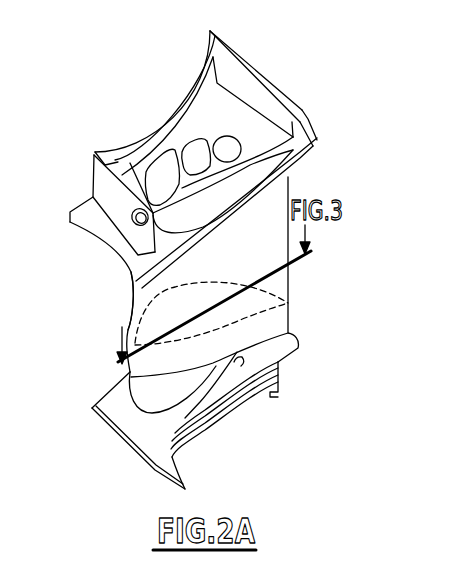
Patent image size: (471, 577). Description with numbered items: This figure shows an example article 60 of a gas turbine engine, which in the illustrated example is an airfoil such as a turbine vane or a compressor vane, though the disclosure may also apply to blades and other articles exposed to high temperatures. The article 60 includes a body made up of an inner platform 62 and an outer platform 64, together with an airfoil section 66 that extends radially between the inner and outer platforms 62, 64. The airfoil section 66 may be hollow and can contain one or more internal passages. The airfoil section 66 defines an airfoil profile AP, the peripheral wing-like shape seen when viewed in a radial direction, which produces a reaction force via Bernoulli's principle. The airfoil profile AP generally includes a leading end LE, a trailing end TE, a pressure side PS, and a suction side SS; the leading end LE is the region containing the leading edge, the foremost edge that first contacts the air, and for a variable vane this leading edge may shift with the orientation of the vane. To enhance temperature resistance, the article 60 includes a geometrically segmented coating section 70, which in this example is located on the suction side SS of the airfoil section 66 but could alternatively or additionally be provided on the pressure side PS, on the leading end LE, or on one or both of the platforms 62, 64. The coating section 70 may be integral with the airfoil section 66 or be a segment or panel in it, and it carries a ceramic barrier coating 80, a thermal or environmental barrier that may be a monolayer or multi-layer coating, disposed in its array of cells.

The article 60 is at (82, 334).
The inner platform 62 is at (132, 423).
The outer platform 64 is at (93, 227).
The airfoil section 66 is at (120, 307).
The geometrically segmented coating section 70 is at (250, 292).
The coating 80 is at (240, 370).
The suction side SS is at (182, 272).
The pressure side PS is at (202, 352).
The leading end LE is at (110, 318).
The trailing end TE is at (305, 302).
The airfoil profile AP is at (117, 373).